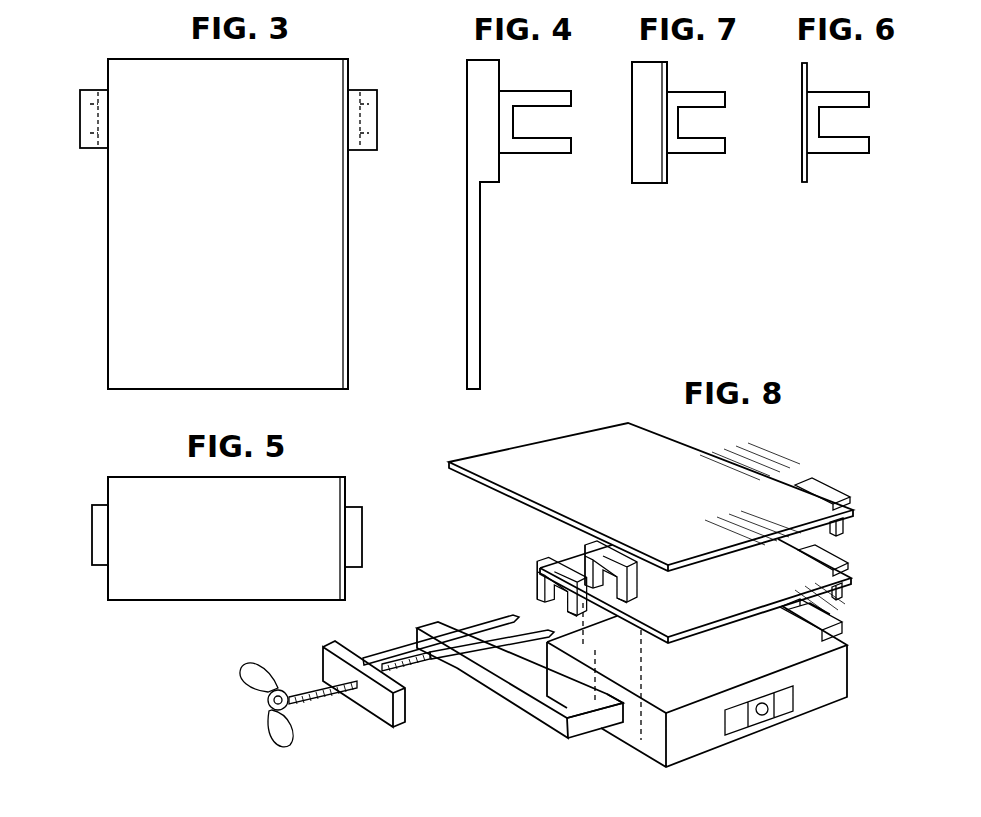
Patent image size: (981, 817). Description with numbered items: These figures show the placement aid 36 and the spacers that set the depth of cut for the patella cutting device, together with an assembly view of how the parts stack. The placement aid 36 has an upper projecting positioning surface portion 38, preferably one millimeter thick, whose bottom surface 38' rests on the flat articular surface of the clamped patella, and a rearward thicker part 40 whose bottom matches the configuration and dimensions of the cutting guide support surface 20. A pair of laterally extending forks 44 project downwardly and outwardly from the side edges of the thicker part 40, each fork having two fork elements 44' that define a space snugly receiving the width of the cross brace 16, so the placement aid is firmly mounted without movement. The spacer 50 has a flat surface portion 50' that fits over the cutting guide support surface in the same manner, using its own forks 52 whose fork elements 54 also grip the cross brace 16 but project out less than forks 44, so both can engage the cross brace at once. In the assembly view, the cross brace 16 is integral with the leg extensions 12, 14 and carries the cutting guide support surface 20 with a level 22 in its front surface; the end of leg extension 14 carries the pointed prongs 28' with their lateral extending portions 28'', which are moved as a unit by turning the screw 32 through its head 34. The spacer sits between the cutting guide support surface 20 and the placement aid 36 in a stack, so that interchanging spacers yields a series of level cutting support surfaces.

In FIG. 8, the leg extension 12 is at (838, 614).
In FIG. 8, the leg extension 14 is at (493, 682).
In FIG. 8, the cross brace 16 is at (840, 633).
In FIG. 8, the cutting guide support surface 20 is at (775, 663).
In FIG. 8, the level 22 is at (790, 707).
In FIG. 8, the pointed prongs 28' is at (441, 621).
In FIG. 8, the lateral extending portions 28'' is at (492, 618).
In FIG. 8, the screw 32 is at (322, 710).
In FIG. 8, the head 34 is at (258, 698).
In FIG. 3, the placement aid 36 is at (135, 271).
In FIG. 4, the placement aid 36 is at (466, 126).
In FIG. 8, the placement aid 36 is at (765, 466).
In FIG. 3, the projecting positioning surface portion 38 is at (228, 224).
In FIG. 4, the projecting positioning surface portion 38 is at (456, 224).
In FIG. 8, the projecting positioning surface portion 38 is at (651, 497).
In FIG. 4, the bottom surface 38' is at (520, 285).
In FIG. 4, the thicker part 40 is at (481, 92).
In FIG. 3, the forks 44 is at (223, 98).
In FIG. 4, the forks 44 is at (561, 122).
In FIG. 8, the forks 44 is at (712, 540).
In FIG. 4, the fork elements 44' is at (549, 121).
In FIG. 7, the spacer 50 is at (627, 146).
In FIG. 6, the spacer 50 is at (830, 149).
In FIG. 6, the flat surface portion 50' is at (775, 149).
In FIG. 5, the flat surface portion 50' is at (226, 538).
In FIG. 8, the flat surface portion 50' is at (695, 577).
In FIG. 7, the forks 52 is at (716, 127).
In FIG. 6, the forks 52 is at (863, 128).
In FIG. 5, the forks 52 is at (95, 520).
In FIG. 8, the forks 52 is at (646, 662).
In FIG. 7, the fork elements 54 is at (697, 95).
In FIG. 6, the fork elements 54 is at (835, 97).